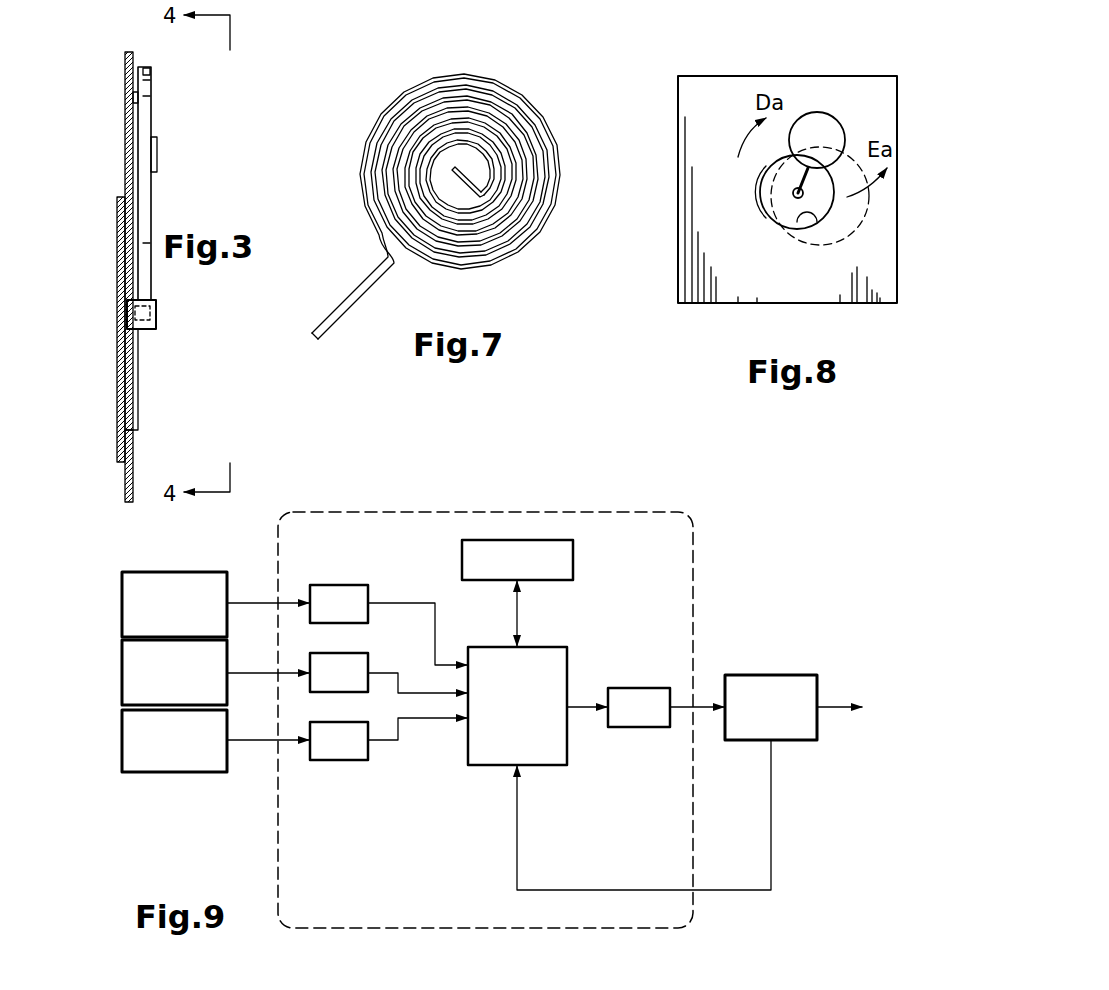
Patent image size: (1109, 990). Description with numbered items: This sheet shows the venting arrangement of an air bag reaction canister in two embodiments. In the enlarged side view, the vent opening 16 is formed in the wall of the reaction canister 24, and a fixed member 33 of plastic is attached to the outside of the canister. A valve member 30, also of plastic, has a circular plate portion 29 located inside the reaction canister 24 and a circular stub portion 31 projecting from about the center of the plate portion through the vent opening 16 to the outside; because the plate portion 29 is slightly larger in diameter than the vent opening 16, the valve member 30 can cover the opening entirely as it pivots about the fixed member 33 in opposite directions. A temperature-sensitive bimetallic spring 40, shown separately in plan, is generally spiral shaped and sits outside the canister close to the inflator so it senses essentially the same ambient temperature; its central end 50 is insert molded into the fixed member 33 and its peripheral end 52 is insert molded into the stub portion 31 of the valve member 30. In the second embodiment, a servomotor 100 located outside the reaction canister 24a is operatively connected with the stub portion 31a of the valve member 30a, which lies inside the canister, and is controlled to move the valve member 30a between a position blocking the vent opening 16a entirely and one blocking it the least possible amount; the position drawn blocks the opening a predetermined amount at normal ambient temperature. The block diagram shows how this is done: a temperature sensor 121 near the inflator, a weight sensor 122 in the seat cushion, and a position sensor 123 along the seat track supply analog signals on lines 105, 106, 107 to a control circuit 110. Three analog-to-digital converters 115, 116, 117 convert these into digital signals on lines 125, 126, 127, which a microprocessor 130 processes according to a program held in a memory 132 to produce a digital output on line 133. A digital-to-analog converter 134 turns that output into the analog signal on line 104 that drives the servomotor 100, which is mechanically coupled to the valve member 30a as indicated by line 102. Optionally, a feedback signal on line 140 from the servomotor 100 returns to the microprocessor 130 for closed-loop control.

In FIG. 3, the vent opening 16 is at (131, 395).
In FIG. 3, the reaction canister 24 is at (130, 472).
In FIG. 3, the plate portion 29 is at (117, 398).
In FIG. 3, the valve member 30 is at (156, 341).
In FIG. 3, the stub portion 31 is at (156, 306).
In FIG. 3, the fixed member 33 is at (157, 148).
In FIG. 3, the bimetallic spring 40 is at (146, 67).
In FIG. 7, the bimetallic spring 40 is at (548, 123).
In FIG. 7, the end of the spring 50 is at (455, 169).
In FIG. 7, the other end of the spring 52 is at (318, 339).
In FIG. 8, the reaction canister 24a is at (747, 74).
In FIG. 8, the servomotor 100 is at (818, 125).
In FIG. 9, the servomotor 100 is at (782, 675).
In FIG. 8, the stub portion 31a is at (792, 192).
In FIG. 8, the valve member 30a is at (778, 228).
In FIG. 8, the vent opening 16a is at (792, 213).
In FIG. 9, the control circuit 110 is at (568, 512).
In FIG. 9, the temperature sensor 121 is at (124, 591).
In FIG. 9, the weight sensor 122 is at (122, 668).
In FIG. 9, the position sensor 123 is at (128, 733).
In FIG. 9, the line 105 is at (252, 606).
In FIG. 9, the line 106 is at (252, 675).
In FIG. 9, the line 107 is at (257, 743).
In FIG. 9, the analog-to-digital converter 115 is at (352, 626).
In FIG. 9, the analog-to-digital converter 116 is at (352, 694).
In FIG. 9, the analog-to-digital converter 117 is at (352, 762).
In FIG. 9, the line 125 is at (400, 604).
In FIG. 9, the line 126 is at (418, 694).
In FIG. 9, the line 127 is at (425, 722).
In FIG. 9, the microprocessor 130 is at (545, 655).
In FIG. 9, the memory 132 is at (573, 562).
In FIG. 9, the line 133 is at (572, 706).
In FIG. 9, the digital-to-analog converter 134 is at (650, 728).
In FIG. 9, the line 104 is at (697, 707).
In FIG. 9, the line 102 is at (825, 710).
In FIG. 9, the line 140 is at (735, 892).